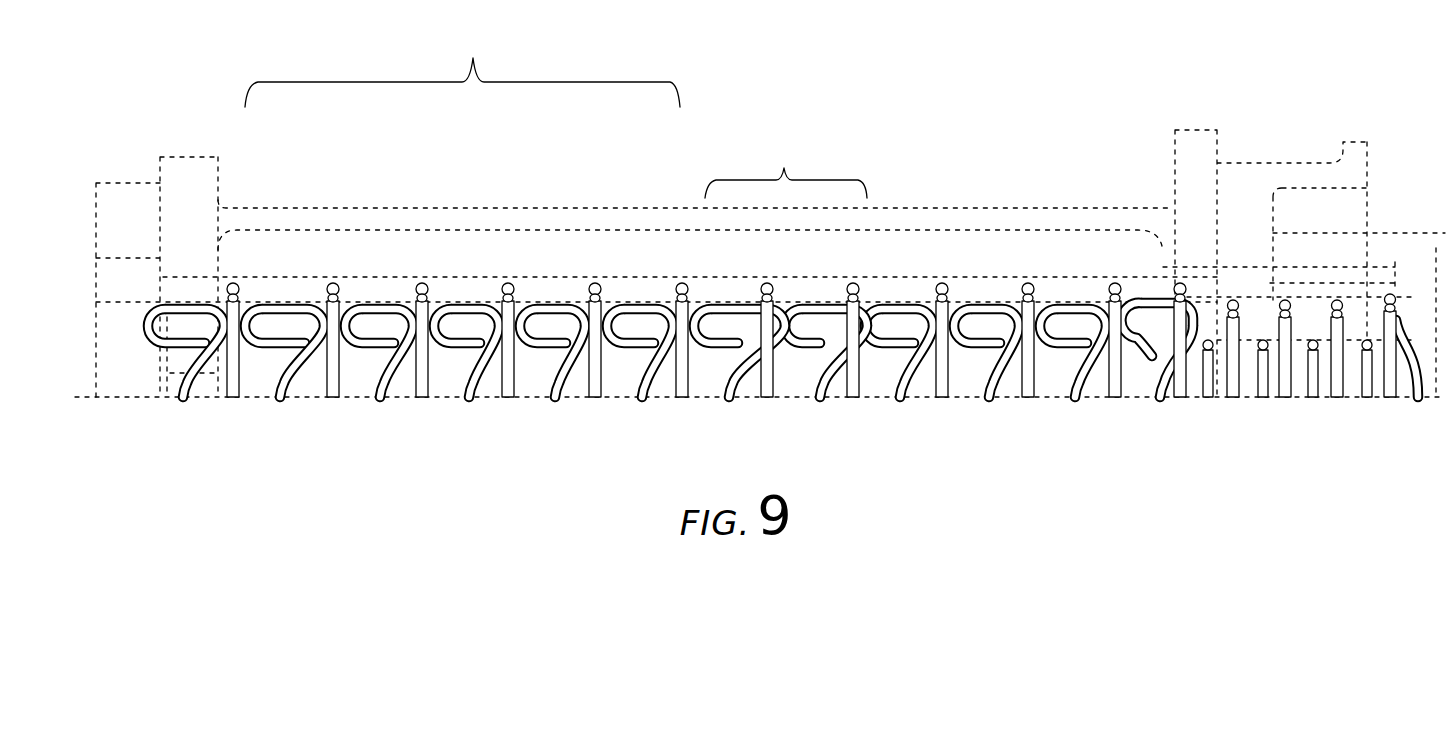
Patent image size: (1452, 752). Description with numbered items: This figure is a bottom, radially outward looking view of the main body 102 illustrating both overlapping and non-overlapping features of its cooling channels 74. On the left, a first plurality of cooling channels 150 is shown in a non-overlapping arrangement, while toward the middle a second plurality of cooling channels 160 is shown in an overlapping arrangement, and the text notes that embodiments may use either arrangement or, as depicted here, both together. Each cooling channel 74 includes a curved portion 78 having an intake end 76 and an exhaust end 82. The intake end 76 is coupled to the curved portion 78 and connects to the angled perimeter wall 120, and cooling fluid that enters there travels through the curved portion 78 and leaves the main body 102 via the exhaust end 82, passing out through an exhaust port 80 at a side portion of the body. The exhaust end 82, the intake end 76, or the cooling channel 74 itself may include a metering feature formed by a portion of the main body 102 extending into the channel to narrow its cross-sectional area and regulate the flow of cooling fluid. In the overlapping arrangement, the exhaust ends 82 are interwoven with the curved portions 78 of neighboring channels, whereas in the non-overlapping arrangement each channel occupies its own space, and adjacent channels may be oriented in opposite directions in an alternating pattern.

The first plurality of cooling channels 150 is at (462, 68).
The second plurality of cooling channels 160 is at (786, 166).
The curved portion 78 is at (382, 302).
The intake end 76 is at (280, 355).
The cooling channel 74 is at (488, 392).
The exhaust port 80 is at (682, 284).
The exhaust end 82 is at (425, 384).
The angled perimeter wall 120 is at (360, 370).
The main body 102 is at (1439, 243).